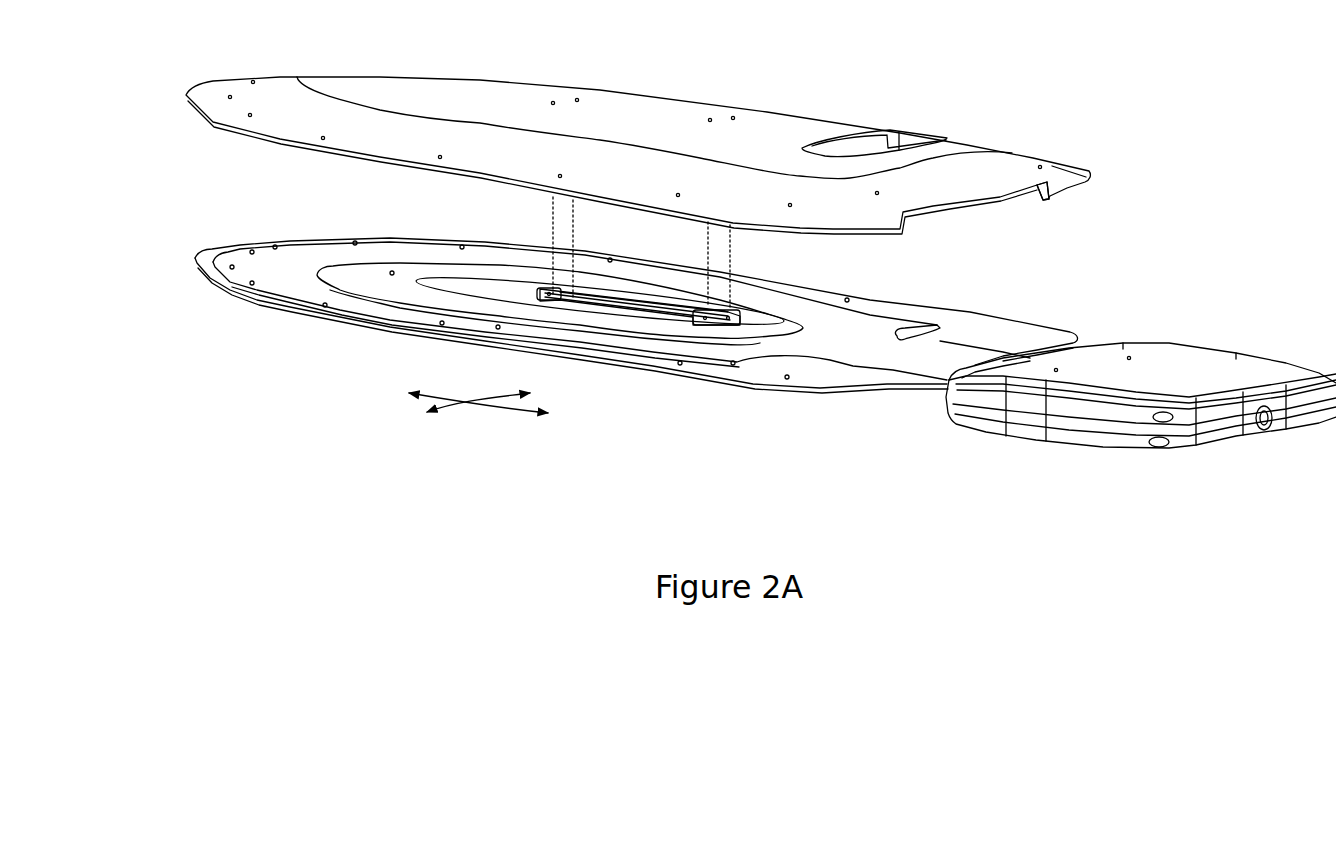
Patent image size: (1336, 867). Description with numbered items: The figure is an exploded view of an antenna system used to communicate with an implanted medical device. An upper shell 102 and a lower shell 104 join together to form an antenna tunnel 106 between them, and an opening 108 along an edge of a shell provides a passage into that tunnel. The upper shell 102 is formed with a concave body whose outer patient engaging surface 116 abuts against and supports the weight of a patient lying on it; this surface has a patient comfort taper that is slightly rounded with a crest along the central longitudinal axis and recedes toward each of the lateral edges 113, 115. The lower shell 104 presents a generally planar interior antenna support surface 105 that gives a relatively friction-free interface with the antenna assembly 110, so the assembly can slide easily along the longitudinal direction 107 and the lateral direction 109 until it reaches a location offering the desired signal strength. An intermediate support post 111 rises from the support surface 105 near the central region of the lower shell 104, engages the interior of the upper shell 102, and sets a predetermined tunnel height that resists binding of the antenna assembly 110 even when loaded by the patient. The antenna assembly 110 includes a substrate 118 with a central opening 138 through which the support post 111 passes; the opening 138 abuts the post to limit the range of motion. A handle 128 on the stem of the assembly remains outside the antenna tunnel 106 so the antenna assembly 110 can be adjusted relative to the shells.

The upper shell 102 is at (291, 76).
The outer patient engaging surface 116 is at (637, 117).
The lateral edge 115 is at (763, 112).
The opening 108 is at (1003, 198).
The lateral edge 113 is at (380, 164).
The antenna tunnel 106 is at (228, 186).
The lower shell 104 is at (216, 288).
The interior antenna support surface 105 is at (317, 243).
The central opening 138 is at (447, 287).
The intermediate support post 111 is at (680, 305).
The substrate 118 is at (567, 352).
The lateral direction 109 is at (457, 411).
The longitudinal direction 107 is at (510, 411).
The antenna assembly 110 is at (887, 400).
The handle 128 is at (1108, 442).